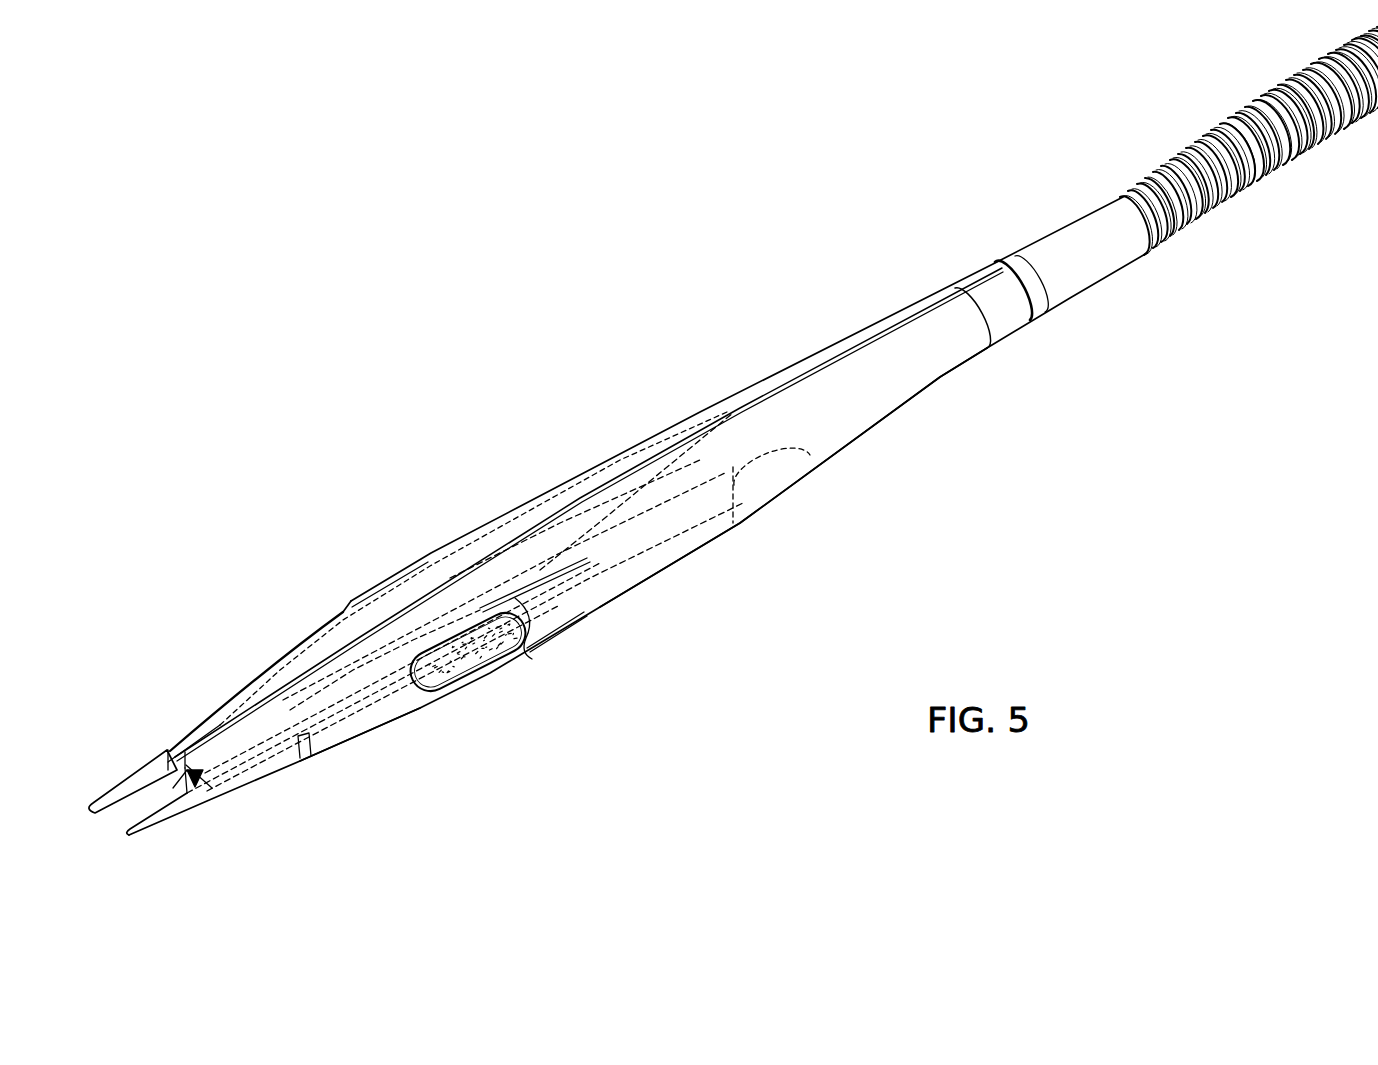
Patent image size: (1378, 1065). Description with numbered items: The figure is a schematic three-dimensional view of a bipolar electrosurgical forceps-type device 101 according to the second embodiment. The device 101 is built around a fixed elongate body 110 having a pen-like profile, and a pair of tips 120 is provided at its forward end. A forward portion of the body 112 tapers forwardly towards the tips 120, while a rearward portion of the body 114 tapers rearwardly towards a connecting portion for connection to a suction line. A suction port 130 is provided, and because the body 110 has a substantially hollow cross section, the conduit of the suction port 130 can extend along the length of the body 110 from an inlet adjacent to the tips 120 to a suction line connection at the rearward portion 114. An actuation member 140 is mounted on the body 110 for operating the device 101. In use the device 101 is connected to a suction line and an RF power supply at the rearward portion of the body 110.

The device 101 is at (733, 482).
The fixed elongate body 110 is at (744, 508).
The forward portion of the body 112 is at (272, 676).
The rearward portion of the body 114 is at (928, 373).
The pair of tips 120 is at (150, 790).
The suction port 130 is at (146, 727).
The actuation member 140 is at (468, 673).